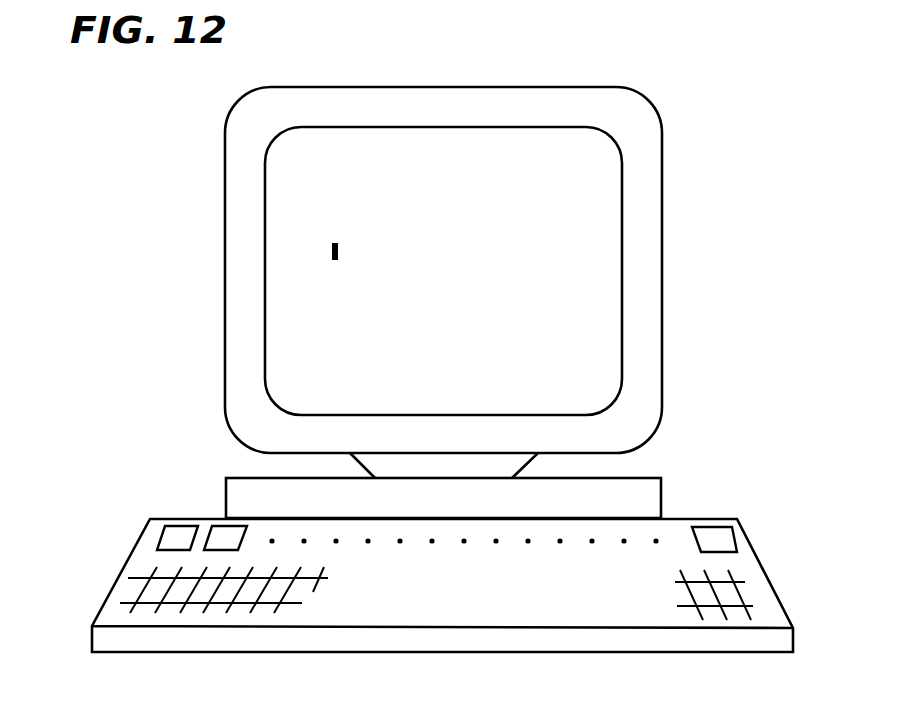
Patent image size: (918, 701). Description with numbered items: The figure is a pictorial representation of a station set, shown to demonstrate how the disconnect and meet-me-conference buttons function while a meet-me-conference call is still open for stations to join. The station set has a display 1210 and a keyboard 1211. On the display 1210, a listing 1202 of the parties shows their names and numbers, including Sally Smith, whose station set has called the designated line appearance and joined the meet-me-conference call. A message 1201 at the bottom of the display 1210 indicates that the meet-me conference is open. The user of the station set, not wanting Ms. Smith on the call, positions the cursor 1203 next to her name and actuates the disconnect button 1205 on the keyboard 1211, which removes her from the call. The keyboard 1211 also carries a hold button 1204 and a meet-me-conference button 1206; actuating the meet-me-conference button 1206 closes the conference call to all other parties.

The status message (MEET-ME CONFERENCE OPEN) 1201 is at (313, 393).
The directory listing of names and numbers 1202 is at (600, 253).
The cursor 1203 is at (330, 250).
The hold key 1204 is at (227, 537).
The disconnect button 1205 is at (170, 538).
The meet-me conference key 1206 is at (712, 542).
The display 1210 is at (662, 363).
The keyboard 1211 is at (798, 583).